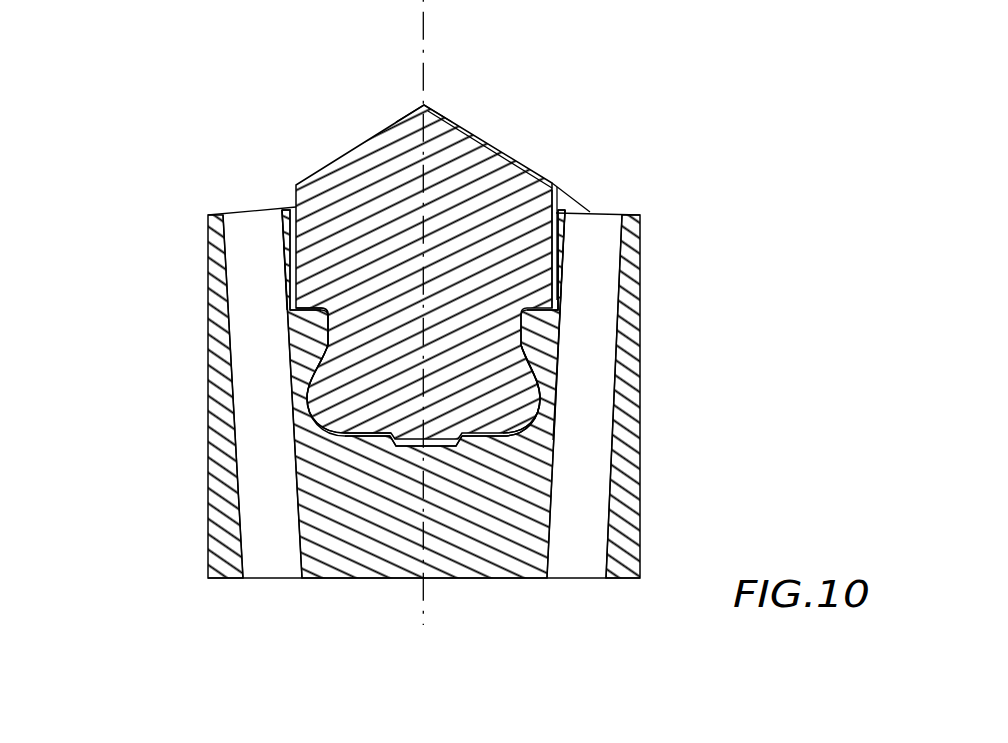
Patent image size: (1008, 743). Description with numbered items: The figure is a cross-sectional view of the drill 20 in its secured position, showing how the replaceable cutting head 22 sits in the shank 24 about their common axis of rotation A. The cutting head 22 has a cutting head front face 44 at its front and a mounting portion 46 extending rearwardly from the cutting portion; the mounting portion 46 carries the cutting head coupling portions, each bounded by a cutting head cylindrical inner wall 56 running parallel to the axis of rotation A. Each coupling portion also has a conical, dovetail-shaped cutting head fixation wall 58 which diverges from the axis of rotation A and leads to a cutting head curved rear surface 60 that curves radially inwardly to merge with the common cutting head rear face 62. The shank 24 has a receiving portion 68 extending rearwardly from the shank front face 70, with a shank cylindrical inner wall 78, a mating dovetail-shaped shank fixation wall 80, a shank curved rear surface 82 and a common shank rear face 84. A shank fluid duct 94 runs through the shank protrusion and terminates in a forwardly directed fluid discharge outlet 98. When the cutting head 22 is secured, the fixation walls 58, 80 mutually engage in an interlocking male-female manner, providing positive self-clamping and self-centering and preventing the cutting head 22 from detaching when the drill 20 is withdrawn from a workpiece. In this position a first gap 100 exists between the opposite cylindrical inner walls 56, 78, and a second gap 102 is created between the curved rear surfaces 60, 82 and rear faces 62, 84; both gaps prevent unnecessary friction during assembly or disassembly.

The axis of rotation A is at (423, 33).
The drill 20 is at (698, 120).
The cutting head 22 is at (524, 164).
The shank 24 is at (646, 313).
The cutting head front face 44 is at (438, 113).
The mounting portion 46 is at (488, 348).
The cutting head cylindrical inner wall 56 is at (560, 233).
The cutting head fixation wall 58 is at (297, 362).
The cutting head curved rear surface 60 is at (523, 424).
The cutting head rear face 62 is at (553, 505).
The receiving portion 68 is at (541, 338).
The shank front face 70 is at (212, 213).
The shank cylindrical inner wall 78 is at (563, 241).
The shank fixation wall 80 is at (324, 331).
The shank curved rear surface 82 is at (505, 437).
The shank rear face 84 is at (458, 441).
The shank fluid duct 94 is at (278, 393).
The fluid discharge outlet 98 is at (282, 208).
The first gap 100 is at (563, 236).
The second gap 102 is at (375, 441).